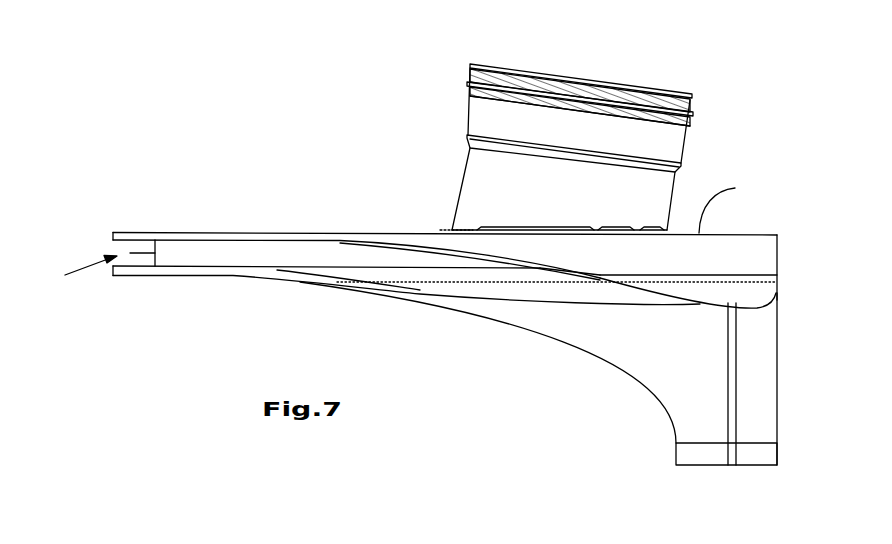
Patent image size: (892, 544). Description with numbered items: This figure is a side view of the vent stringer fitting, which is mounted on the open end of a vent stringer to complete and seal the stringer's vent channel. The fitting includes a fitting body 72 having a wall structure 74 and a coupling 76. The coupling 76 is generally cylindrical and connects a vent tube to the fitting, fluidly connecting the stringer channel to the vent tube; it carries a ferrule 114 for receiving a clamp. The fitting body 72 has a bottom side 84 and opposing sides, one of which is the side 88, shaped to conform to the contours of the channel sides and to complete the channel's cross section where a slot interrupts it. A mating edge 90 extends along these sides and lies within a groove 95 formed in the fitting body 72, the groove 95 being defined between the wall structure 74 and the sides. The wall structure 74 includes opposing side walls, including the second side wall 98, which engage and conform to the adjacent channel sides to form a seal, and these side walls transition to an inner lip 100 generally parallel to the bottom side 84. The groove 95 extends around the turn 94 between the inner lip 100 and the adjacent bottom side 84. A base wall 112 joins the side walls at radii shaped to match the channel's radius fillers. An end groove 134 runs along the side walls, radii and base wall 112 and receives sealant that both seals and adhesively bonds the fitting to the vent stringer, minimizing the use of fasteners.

The fitting body 72 is at (445, 237).
The wall structure 74 is at (777, 320).
The coupling 76 is at (683, 132).
The bottom side 84 is at (138, 232).
The side 88 is at (758, 260).
The mating edge 90 is at (250, 262).
The turn 94 is at (153, 254).
The groove 95 is at (75, 279).
The second side wall 98 is at (640, 345).
The inner lip 100 is at (143, 276).
The base wall 112 is at (712, 465).
The ferrule 114 is at (470, 72).
The end groove 134 is at (733, 382).